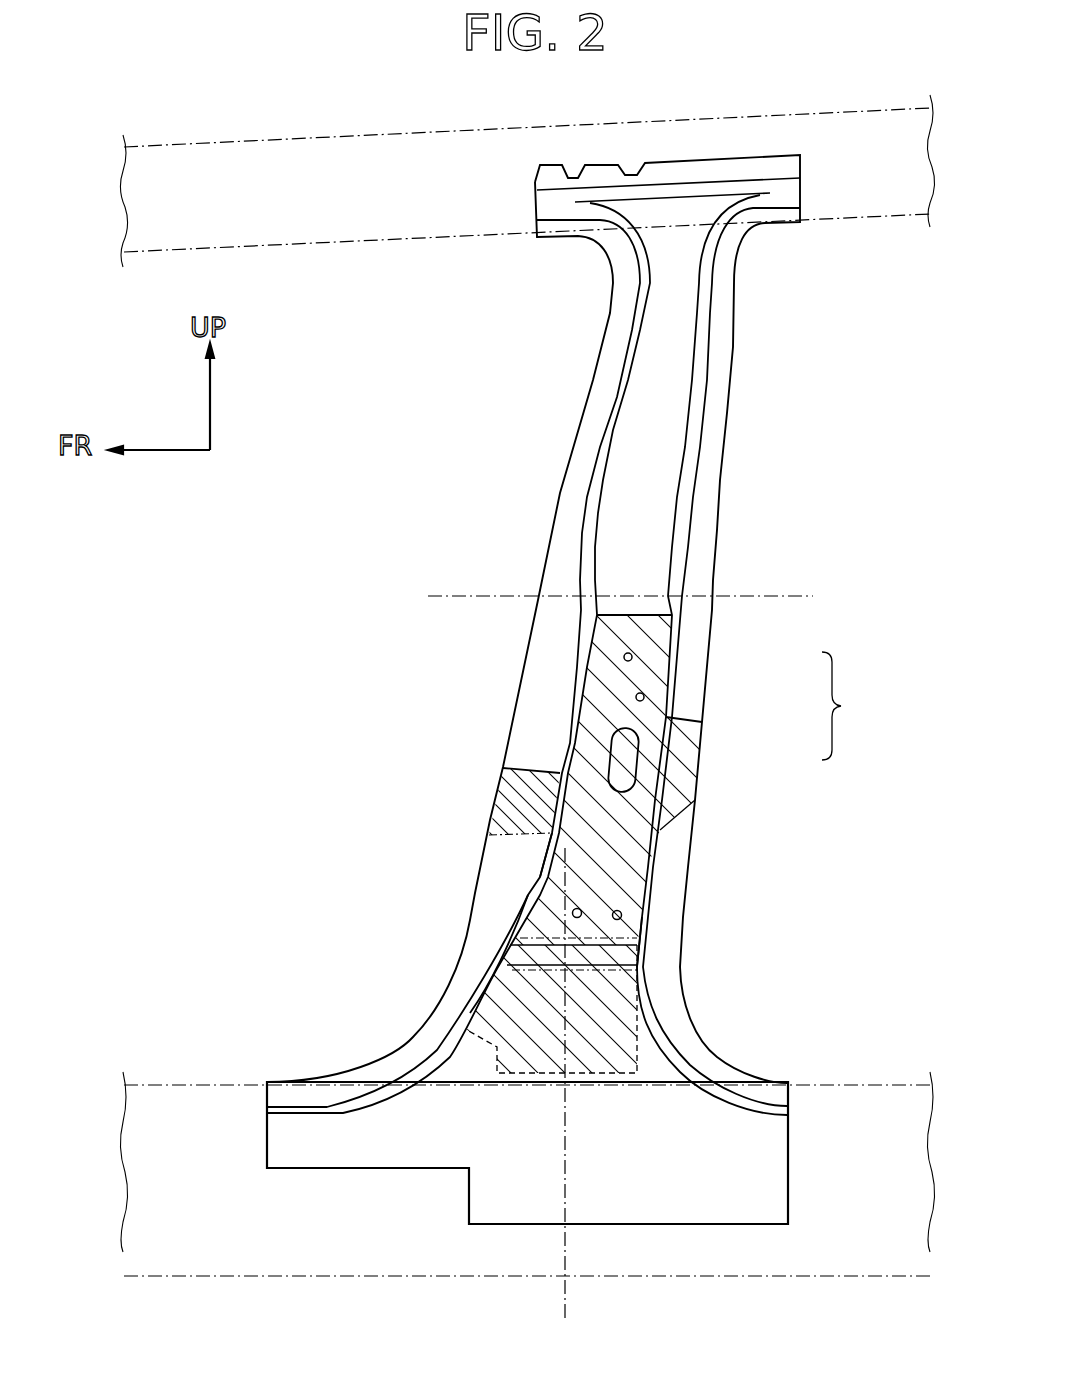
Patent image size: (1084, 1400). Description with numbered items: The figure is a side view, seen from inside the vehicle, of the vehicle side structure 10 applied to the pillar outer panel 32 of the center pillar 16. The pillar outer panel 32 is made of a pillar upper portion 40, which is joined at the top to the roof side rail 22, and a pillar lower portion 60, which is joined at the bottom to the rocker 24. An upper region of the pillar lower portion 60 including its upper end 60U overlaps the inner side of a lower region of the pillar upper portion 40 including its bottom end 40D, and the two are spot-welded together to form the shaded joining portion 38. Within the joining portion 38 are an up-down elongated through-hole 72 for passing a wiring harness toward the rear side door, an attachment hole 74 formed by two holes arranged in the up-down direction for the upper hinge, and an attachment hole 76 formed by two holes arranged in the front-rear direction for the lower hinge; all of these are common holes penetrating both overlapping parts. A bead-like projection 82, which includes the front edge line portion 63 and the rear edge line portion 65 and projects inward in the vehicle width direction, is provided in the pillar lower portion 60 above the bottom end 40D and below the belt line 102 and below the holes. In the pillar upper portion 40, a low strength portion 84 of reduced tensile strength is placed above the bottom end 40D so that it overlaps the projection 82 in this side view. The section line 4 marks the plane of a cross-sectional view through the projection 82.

The vehicle side structure 10 is at (738, 376).
The center pillar 16 is at (600, 677).
The roof side rail 22 is at (298, 157).
The rocker 24 is at (185, 1258).
The pillar outer panel 32 is at (600, 734).
The joining portion 38 is at (515, 800).
The pillar upper portion 40 is at (587, 696).
The bottom end 40D is at (544, 1075).
The pillar lower portion 60 is at (600, 734).
The upper end 60U is at (630, 613).
The front edge line portion 63 is at (490, 990).
The rear edge line portion 65 is at (640, 977).
The through-hole 72 is at (618, 762).
The attachment hole 74 is at (640, 700).
The attachment hole 76 is at (578, 908).
The projection 82 is at (507, 945).
The low strength portion 84 is at (507, 910).
The belt line 102 is at (797, 594).
The section line 4- 4 is at (556, 862).